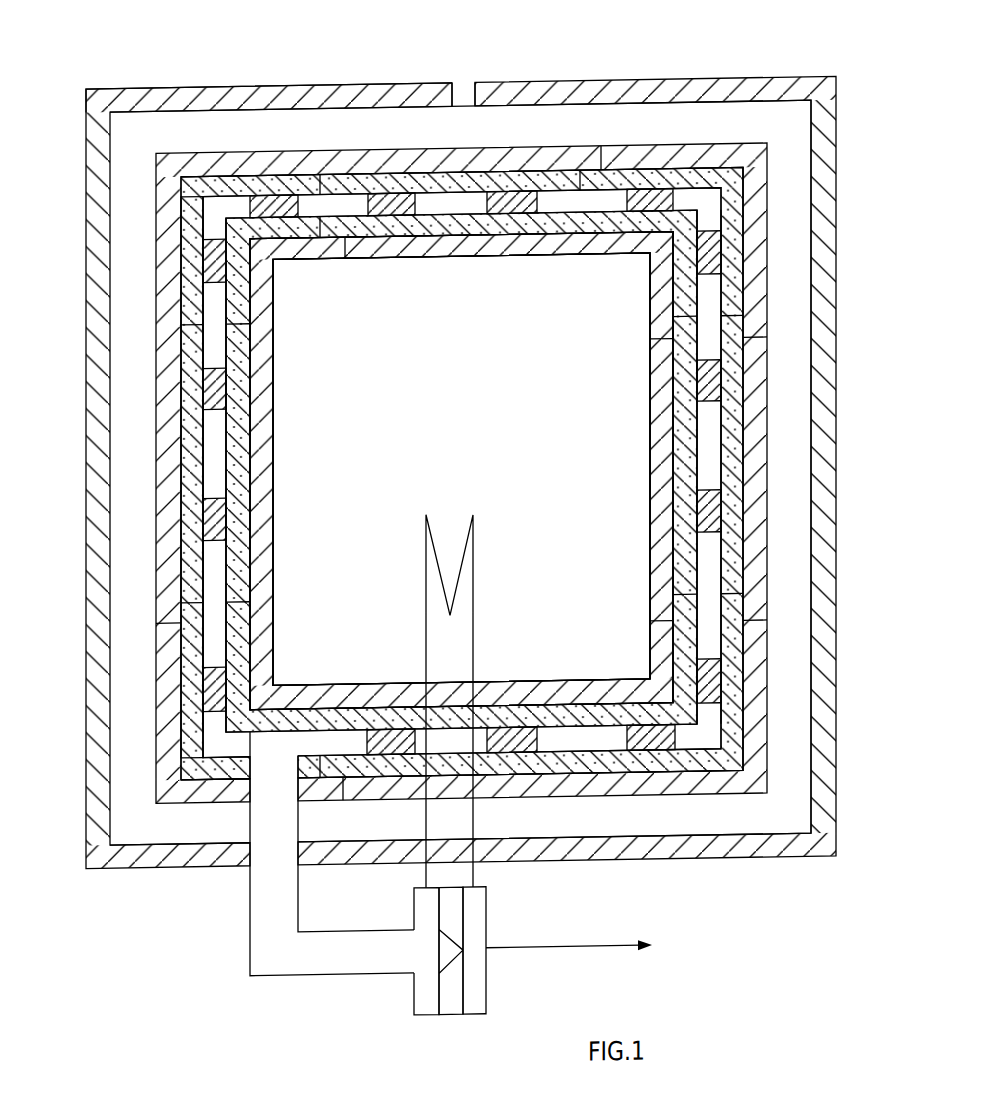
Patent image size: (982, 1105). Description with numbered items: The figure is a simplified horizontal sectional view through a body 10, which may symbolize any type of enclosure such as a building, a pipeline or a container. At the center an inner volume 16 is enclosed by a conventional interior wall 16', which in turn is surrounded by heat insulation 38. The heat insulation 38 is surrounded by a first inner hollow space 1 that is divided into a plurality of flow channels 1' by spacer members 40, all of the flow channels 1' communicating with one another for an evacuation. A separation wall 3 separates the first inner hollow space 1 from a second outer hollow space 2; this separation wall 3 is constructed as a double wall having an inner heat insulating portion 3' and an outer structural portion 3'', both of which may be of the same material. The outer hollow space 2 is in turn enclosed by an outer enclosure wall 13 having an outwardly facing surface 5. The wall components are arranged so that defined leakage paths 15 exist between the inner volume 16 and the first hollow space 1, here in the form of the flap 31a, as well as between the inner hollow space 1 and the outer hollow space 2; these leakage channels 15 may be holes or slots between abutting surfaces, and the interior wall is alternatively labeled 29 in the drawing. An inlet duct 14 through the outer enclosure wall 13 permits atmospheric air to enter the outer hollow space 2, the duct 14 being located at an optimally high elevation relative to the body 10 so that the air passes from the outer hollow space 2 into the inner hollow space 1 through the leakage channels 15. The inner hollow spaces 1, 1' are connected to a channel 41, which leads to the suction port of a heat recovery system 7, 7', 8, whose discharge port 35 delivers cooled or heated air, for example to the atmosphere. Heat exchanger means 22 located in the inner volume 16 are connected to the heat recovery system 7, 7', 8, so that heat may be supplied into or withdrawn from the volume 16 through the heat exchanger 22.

The body 10 is at (647, 53).
The outer enclosure wall 13 is at (713, 90).
The outwardly facing surface 5 is at (295, 90).
The inlet duct 14 is at (462, 105).
The second outer hollow space 2 is at (137, 345).
The leakage path 15 is at (343, 159).
The separation wall 3 is at (430, 474).
The inner heat insulating portion 3' is at (433, 474).
The outer structural portion 3'' is at (160, 478).
The first inner hollow space 1 is at (462, 473).
The flow channel 1' is at (502, 470).
The spacer member 40 is at (228, 529).
The heat insulation 38 is at (240, 457).
The interior wall 16' is at (461, 471).
The chamber wall 29 is at (347, 240).
The flap 31a is at (255, 351).
The inner volume 16 is at (461, 469).
The heat exchanger means 22 is at (463, 595).
The channel 41 is at (275, 963).
The heat recovery system 7 is at (427, 977).
The heat recovery system 7' is at (453, 976).
The heat recovery system 8 is at (473, 1022).
The discharge port 35 is at (556, 959).